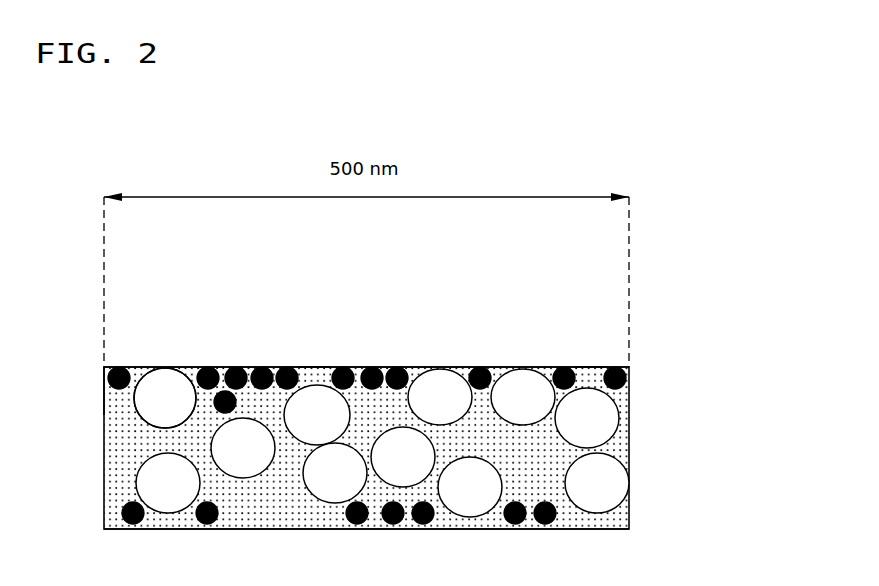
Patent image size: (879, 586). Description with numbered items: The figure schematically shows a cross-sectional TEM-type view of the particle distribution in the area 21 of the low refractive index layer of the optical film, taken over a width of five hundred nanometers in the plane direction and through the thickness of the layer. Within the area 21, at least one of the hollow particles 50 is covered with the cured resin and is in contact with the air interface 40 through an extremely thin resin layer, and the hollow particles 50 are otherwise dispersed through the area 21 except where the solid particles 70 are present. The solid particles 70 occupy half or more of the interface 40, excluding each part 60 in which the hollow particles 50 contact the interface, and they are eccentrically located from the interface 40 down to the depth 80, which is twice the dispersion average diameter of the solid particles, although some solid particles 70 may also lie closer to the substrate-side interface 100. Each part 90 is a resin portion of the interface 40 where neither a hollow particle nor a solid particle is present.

The area of the low refractive index layer 21 is at (608, 452).
The interface 40 is at (640, 367).
The hollow particles 50 is at (153, 385).
The part in which the hollow particles are in contact with 60 is at (133, 362).
The solid particles 70 is at (613, 367).
The depth 80 is at (102, 368).
The part 90 is at (298, 362).
The optically-transparent substrate-side interface 100 is at (640, 528).